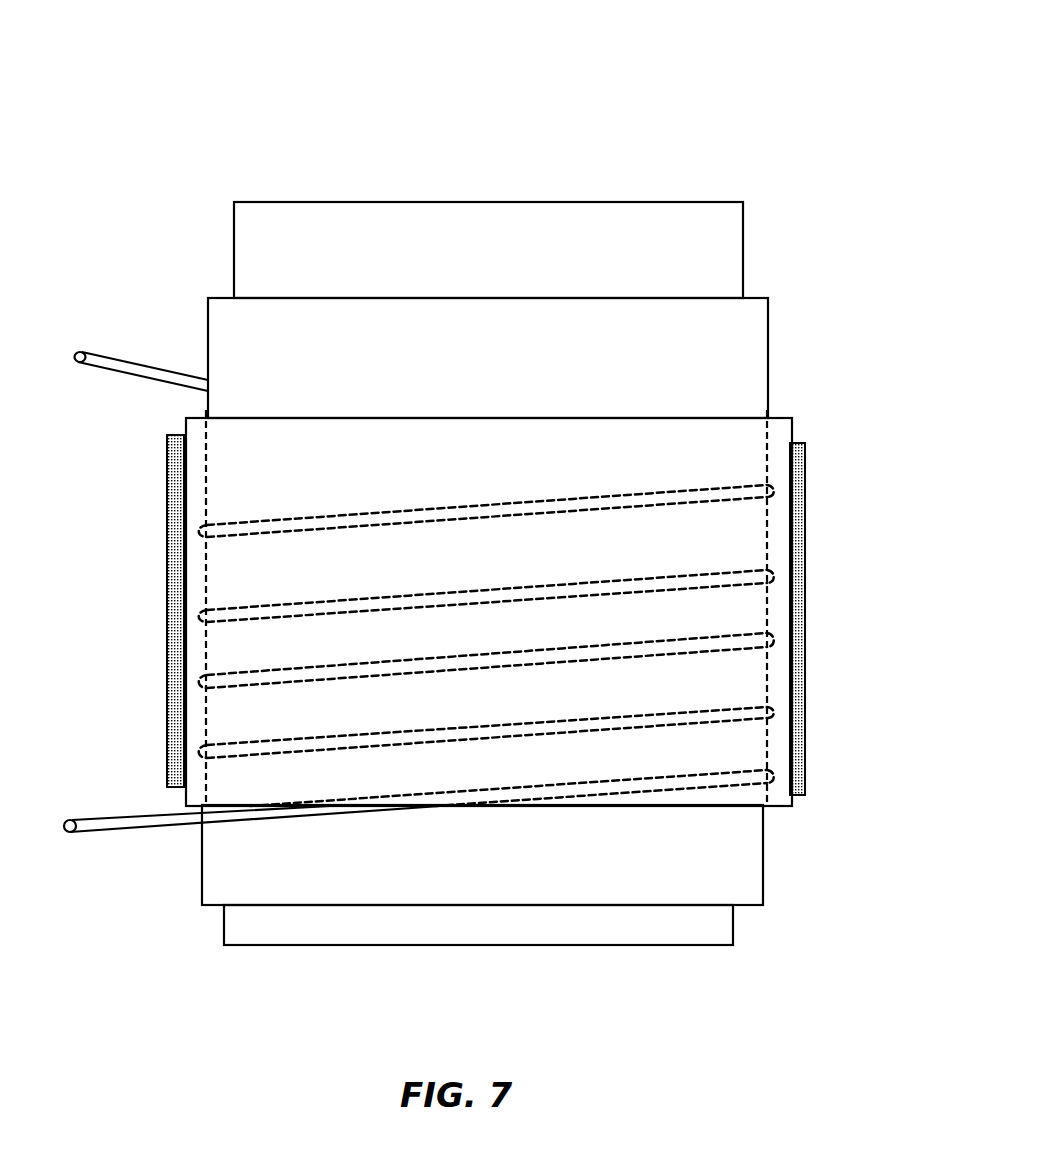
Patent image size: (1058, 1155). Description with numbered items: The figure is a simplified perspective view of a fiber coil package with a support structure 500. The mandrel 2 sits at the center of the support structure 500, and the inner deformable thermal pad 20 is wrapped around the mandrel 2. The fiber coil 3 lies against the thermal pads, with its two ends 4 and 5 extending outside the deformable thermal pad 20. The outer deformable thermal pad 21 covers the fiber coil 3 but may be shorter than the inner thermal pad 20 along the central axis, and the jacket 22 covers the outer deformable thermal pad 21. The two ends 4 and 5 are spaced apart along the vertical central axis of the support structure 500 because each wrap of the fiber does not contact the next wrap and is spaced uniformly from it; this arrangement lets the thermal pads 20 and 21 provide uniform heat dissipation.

The support structure 500 is at (729, 62).
The mandrel 2 is at (234, 243).
The inner deformable thermal pad 20 is at (208, 345).
The outer deformable thermal pad 21 is at (232, 485).
The jacket 22 is at (167, 548).
The fiber coil 3 is at (323, 737).
The first end of fiber coil 4 is at (130, 377).
The second end of fiber coil 5 is at (128, 812).